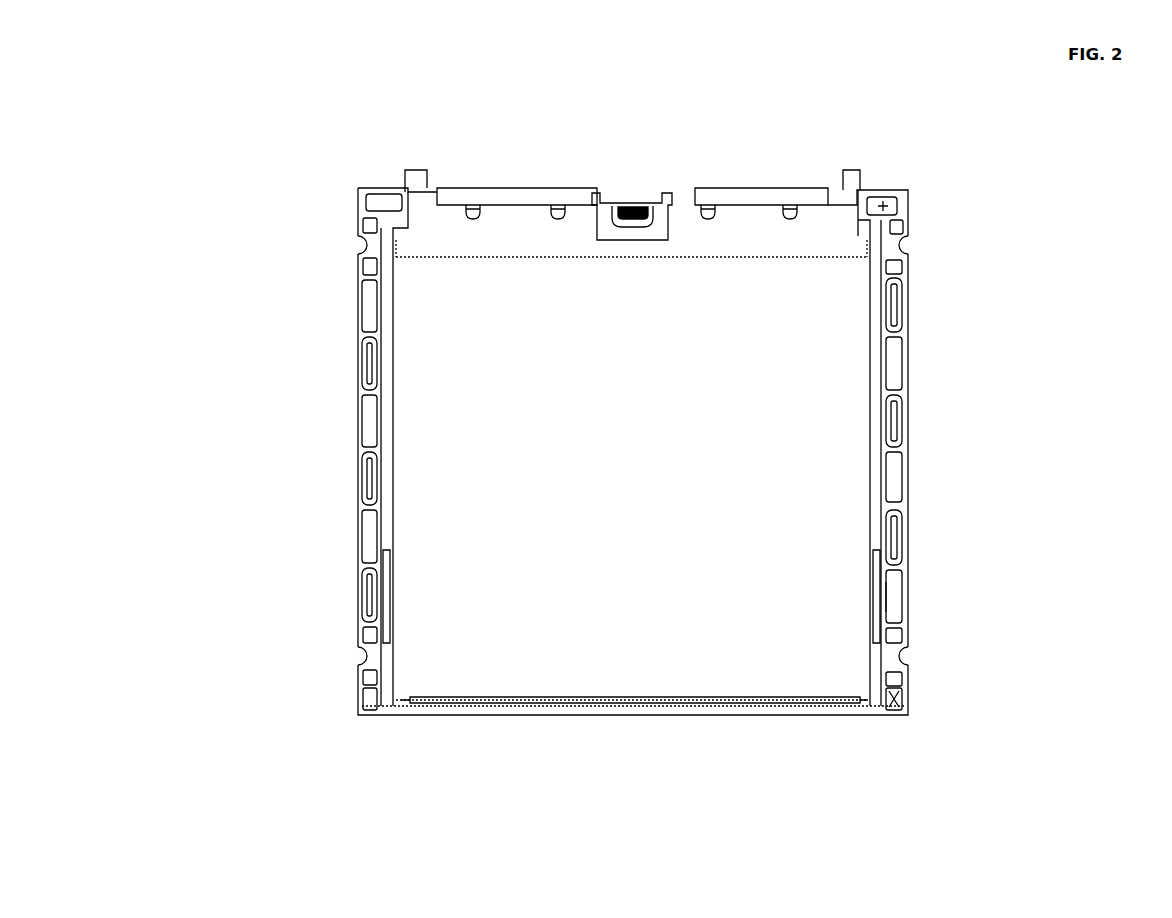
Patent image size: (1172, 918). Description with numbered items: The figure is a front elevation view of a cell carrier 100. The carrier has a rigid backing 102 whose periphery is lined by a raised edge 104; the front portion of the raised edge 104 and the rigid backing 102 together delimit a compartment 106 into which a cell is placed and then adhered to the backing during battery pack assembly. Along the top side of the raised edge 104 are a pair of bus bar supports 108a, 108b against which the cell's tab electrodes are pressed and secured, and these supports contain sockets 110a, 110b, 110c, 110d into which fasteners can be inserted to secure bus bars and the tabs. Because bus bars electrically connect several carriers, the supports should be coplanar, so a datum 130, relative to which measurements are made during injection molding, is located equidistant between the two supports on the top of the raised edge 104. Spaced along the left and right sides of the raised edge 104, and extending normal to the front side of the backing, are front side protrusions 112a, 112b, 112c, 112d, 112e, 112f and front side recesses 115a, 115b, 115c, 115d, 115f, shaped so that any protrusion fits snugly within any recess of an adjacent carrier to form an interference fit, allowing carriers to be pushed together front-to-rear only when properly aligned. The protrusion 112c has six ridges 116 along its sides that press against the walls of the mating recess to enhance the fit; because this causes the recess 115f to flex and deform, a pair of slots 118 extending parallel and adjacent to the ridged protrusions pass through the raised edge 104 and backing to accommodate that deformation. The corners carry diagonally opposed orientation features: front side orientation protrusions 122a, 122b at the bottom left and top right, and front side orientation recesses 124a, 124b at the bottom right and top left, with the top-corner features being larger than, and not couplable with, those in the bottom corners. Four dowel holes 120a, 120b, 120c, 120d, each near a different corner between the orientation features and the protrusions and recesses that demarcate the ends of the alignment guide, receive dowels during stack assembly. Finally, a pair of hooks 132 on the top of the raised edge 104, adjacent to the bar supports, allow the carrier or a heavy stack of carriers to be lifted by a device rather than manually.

The cell carrier 100 is at (855, 122).
The rigid backing 102 is at (770, 655).
The raised edge 104 is at (912, 275).
The compartment 106 is at (648, 662).
The bus bar support 108a is at (755, 188).
The bus bar support 108b is at (515, 188).
The socket 110a is at (790, 205).
The socket 110b is at (708, 205).
The socket 110c is at (558, 205).
The socket 110d is at (473, 205).
The front side protrusion 112a is at (989, 363).
The front side protrusion 112b is at (989, 477).
The front side protrusion 112c is at (903, 582).
The front side protrusion 112d is at (372, 292).
The front side protrusion 112e is at (372, 412).
The front side protrusion 112f is at (372, 527).
The front side recess 115a is at (910, 298).
The front side recess 115b is at (910, 412).
The front side recess 115c is at (636, 508).
The front side recess 115d is at (279, 363).
The front side recess 115f is at (370, 590).
The ridges 116 is at (898, 577).
The slots 118 is at (387, 620).
The dowel hole 120a is at (902, 232).
The dowel hole 120b is at (902, 655).
The dowel hole 120c is at (360, 655).
The dowel hole 120d is at (360, 247).
The front side orientation protrusion 122a is at (372, 680).
The front side orientation protrusion 122b is at (880, 200).
The front side orientation recess 124a is at (900, 678).
The front side orientation recess 124b is at (388, 200).
The datum 130 is at (632, 210).
The hooks 132 is at (412, 170).